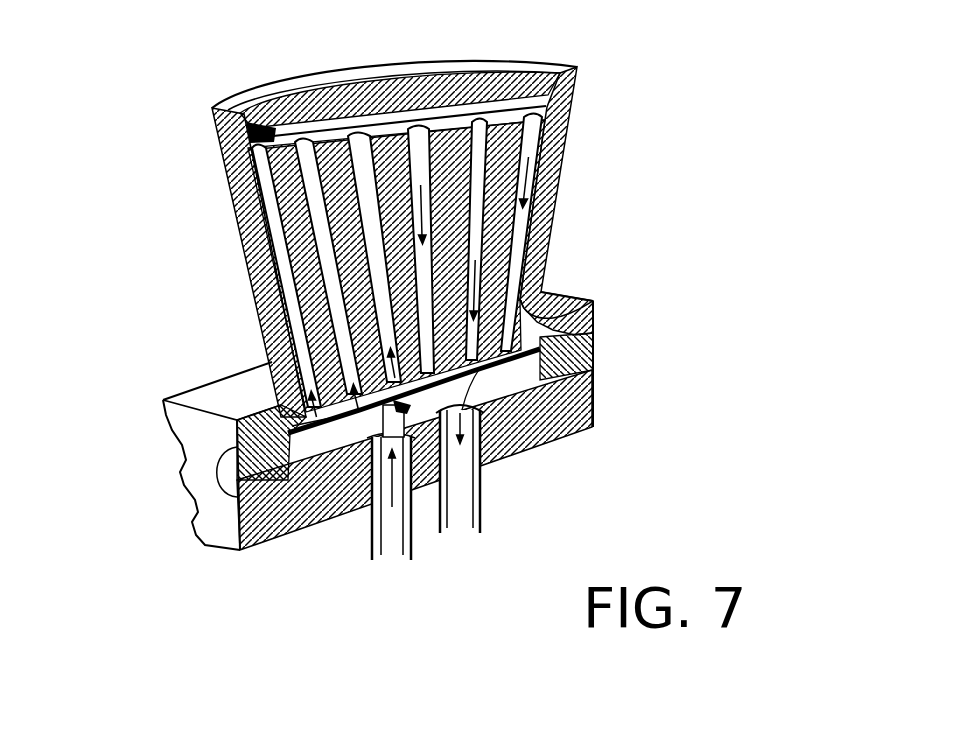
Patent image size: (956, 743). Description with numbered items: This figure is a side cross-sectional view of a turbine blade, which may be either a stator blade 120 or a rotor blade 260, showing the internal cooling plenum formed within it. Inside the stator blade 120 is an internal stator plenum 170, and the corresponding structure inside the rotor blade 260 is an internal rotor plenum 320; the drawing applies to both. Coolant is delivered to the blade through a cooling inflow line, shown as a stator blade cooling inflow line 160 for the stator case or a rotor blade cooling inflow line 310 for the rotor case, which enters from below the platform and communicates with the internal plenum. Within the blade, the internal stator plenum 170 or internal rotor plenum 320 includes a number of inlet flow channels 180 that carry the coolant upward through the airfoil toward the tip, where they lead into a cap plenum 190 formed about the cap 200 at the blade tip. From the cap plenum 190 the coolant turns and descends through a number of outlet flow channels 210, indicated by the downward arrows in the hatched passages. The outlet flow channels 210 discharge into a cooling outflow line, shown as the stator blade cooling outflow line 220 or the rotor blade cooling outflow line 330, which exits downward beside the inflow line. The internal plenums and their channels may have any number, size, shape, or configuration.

The stator blade 120 is at (369, 250).
The rotor blade 260 is at (369, 250).
The cap 200 is at (455, 73).
The cap plenum 190 is at (518, 112).
The internal stator plenum 170 is at (585, 201).
The internal rotor plenum 320 is at (545, 216).
The outlet flow channels 210 is at (543, 315).
The inlet flow channels 180 is at (303, 512).
The stator blade cooling inflow line 160 is at (360, 501).
The rotor blade cooling inflow line 310 is at (372, 532).
The stator blade cooling outflow line 220 is at (510, 452).
The rotor blade cooling outflow line 330 is at (483, 497).